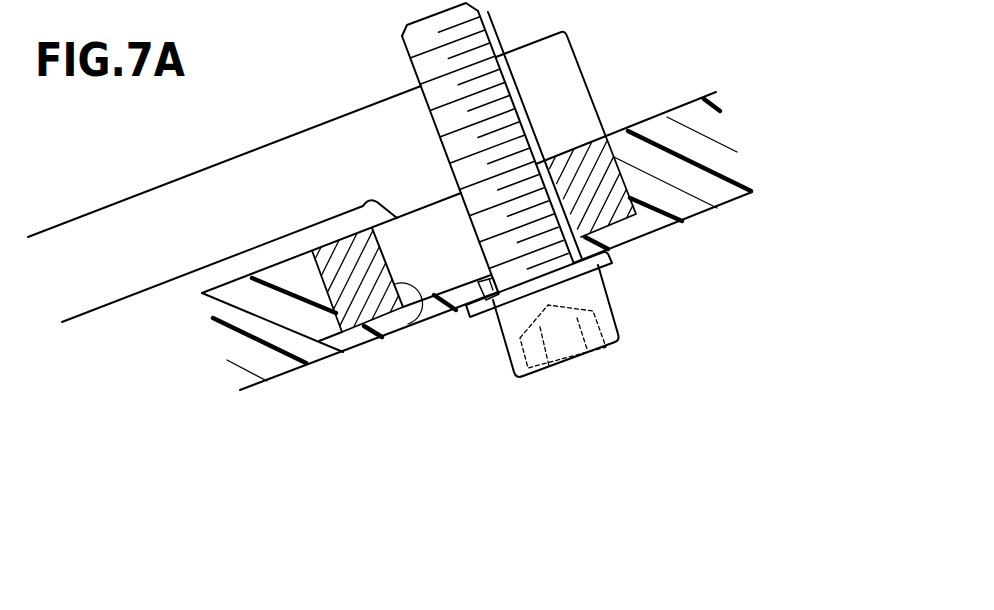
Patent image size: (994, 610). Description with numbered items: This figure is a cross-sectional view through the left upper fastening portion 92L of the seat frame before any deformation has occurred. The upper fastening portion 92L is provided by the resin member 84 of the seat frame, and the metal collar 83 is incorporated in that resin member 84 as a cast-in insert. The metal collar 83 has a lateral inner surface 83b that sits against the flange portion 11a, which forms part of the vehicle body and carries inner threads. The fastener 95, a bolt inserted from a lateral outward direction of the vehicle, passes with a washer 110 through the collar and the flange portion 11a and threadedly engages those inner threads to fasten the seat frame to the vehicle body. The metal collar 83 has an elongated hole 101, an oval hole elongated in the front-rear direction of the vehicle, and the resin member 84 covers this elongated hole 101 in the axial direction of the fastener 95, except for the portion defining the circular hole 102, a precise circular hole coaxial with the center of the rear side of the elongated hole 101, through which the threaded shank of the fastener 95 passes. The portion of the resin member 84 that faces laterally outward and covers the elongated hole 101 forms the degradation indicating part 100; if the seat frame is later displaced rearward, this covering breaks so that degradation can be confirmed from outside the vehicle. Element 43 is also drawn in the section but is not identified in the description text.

The flange portion 11a is at (553, 68).
The lateral inner surface 83b is at (577, 153).
The metal collar 83 is at (610, 200).
The washer 110 is at (605, 264).
The upper fastening portion 92L is at (608, 342).
The fastener 95 is at (540, 363).
The circular hole 102 is at (506, 300).
The resin member 84 is at (428, 312).
The degradation indicating part 100 is at (443, 320).
The elongated hole 101 is at (408, 325).
The lower plate 43 is at (323, 362).